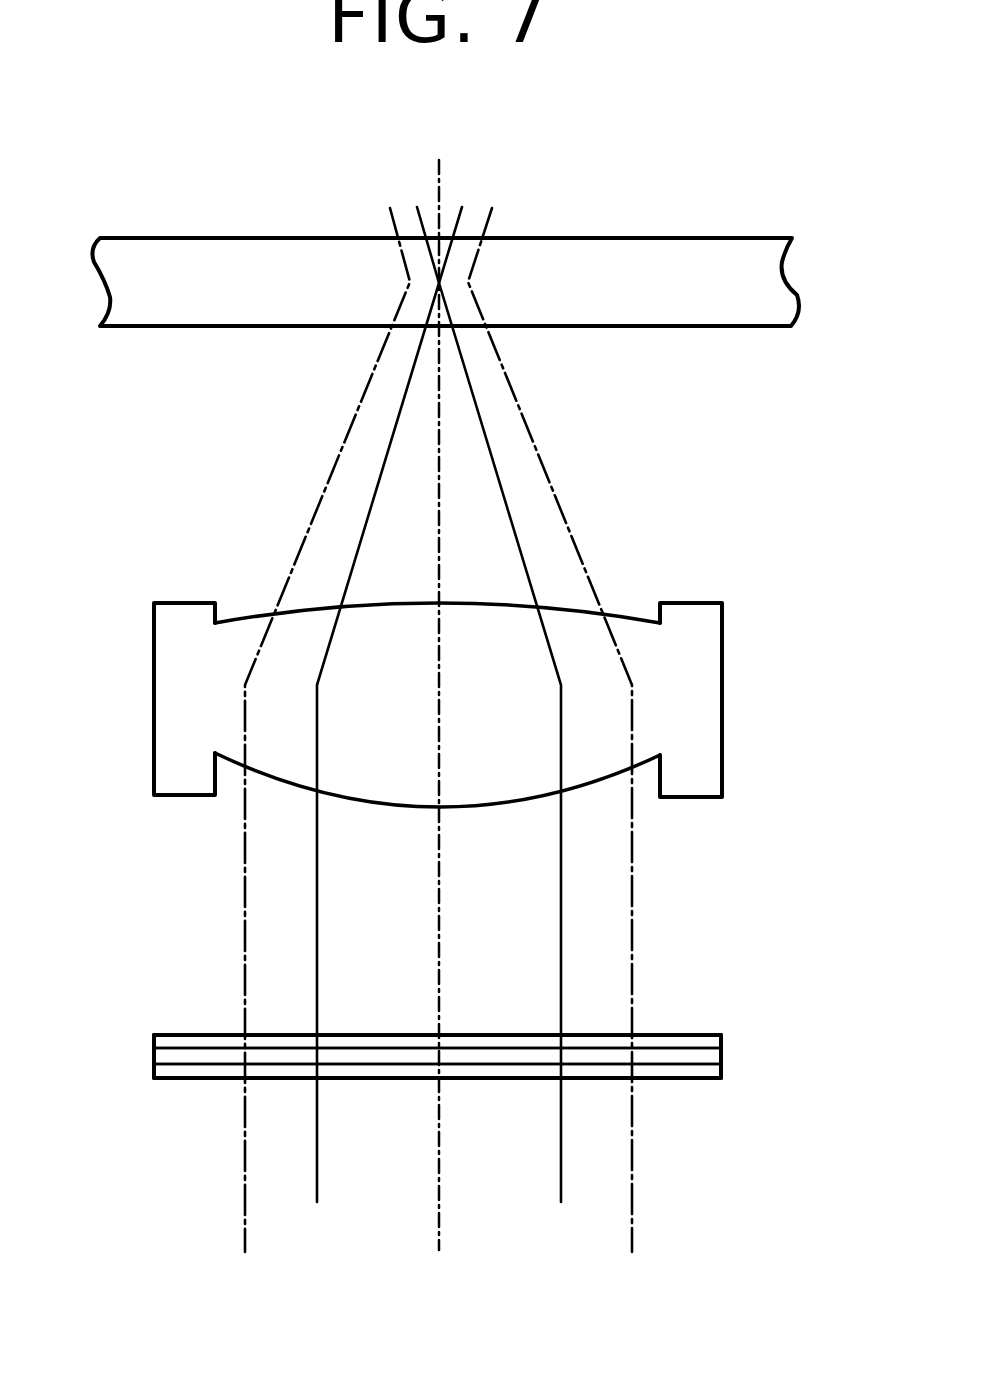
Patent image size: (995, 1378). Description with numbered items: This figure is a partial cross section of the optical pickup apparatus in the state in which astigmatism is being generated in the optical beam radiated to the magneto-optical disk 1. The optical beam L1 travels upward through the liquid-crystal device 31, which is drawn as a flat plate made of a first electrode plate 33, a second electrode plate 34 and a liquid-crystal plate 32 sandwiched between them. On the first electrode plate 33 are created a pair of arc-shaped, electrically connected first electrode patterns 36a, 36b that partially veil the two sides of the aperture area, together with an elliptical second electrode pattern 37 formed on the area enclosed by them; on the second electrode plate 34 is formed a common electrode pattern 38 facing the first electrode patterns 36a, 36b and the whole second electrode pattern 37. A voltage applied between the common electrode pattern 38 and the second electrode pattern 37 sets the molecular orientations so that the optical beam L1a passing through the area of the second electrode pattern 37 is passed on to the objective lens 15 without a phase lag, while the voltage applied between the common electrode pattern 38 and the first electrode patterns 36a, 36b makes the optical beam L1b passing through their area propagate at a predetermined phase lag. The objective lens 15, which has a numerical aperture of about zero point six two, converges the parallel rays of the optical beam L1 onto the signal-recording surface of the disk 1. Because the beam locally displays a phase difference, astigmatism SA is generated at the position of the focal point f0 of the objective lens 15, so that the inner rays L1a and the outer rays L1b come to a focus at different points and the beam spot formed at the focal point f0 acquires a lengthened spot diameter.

The magneto-optical disk 1 is at (173, 238).
The objective lens 15 is at (154, 700).
The liquid-crystal device 31 is at (722, 1058).
The liquid-crystal plate 32 is at (150, 1057).
The first electrode plate 33 is at (150, 1040).
The second electrode plate 34 is at (150, 1072).
The first electrode pattern 36a is at (275, 1020).
The first electrode pattern 36b is at (592, 1023).
The second electrode pattern 37 is at (393, 1022).
The common electrode pattern 38 is at (277, 1082).
The astigmatism SA is at (410, 282).
The focal point f0 is at (468, 282).
The optical beam L1 is at (632, 1183).
The optical beam L1a is at (560, 874).
The optical beam L1b is at (244, 868).